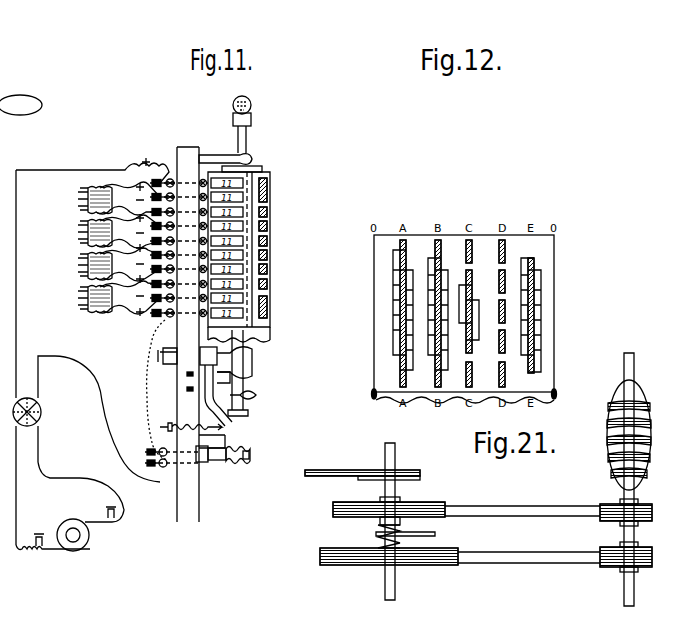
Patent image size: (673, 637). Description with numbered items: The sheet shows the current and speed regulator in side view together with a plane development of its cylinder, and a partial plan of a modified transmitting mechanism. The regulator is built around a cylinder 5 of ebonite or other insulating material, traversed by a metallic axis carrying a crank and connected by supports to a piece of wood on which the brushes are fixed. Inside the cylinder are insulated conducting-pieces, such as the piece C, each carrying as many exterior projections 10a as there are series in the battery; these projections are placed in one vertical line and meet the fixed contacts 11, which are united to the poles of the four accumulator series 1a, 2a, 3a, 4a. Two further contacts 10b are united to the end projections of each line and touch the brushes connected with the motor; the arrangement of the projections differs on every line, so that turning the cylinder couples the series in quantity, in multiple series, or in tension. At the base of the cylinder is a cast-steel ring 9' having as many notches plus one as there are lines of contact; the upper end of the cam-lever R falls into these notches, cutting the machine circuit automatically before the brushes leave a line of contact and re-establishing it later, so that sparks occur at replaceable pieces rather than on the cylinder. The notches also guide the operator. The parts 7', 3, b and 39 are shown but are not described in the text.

In FIG. 11, the fixed contacts 11 is at (222, 248).
In FIG. 11, the exterior projections 10a is at (268, 207).
In FIG. 12, the exterior projections 10a is at (400, 250).
In FIG. 11, the end contacts 10b is at (268, 178).
In FIG. 11, the cylinder 5 is at (268, 241).
In FIG. 11, the ring 9' is at (243, 347).
In FIG. 12, the ring 9' is at (457, 410).
In FIG. 11, the cam-lever R is at (205, 378).
In FIG. 11, the knob 7' is at (234, 390).
In FIG. 11, the plug terminals 3 is at (197, 465).
In FIG. 11, the conducting-piece C is at (148, 378).
In FIG. 11, the return wire b is at (50, 170).
In FIG. 11, the first series 1a is at (119, 198).
In FIG. 11, the second series 2a is at (119, 231).
In FIG. 11, the third series 3a is at (119, 262).
In FIG. 11, the fourth series 4a is at (119, 294).
In FIG. 21, the toothed rack 39 is at (312, 478).